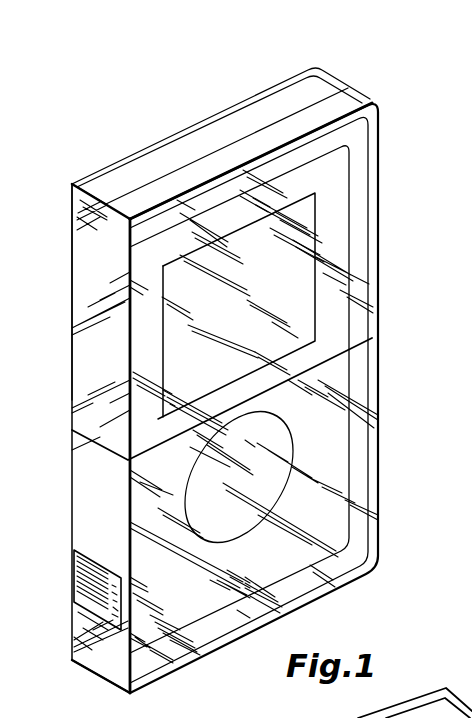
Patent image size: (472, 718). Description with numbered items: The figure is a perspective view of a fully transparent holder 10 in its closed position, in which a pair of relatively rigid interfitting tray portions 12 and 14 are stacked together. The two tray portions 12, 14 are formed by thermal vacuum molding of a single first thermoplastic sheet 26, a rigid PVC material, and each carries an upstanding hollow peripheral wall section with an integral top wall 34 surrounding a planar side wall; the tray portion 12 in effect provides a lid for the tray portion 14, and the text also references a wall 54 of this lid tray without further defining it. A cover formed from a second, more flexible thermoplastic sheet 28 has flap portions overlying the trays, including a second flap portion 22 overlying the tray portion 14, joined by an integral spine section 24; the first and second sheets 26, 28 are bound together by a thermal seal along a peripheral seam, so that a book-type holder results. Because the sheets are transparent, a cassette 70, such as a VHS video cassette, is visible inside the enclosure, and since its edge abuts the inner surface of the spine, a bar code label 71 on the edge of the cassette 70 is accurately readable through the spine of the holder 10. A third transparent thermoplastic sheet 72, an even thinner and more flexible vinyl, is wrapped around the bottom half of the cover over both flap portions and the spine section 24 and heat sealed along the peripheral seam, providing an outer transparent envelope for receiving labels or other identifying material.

The holder 10 is at (320, 53).
The tray portion 12 is at (335, 72).
The tray portion 14 is at (349, 92).
The second flap portion 22 is at (385, 177).
The spine section 24 is at (75, 355).
The first thermoplastic sheet 26 is at (126, 161).
The second thermoplastic sheet 28 is at (70, 254).
The top wall 34 is at (234, 150).
The top surface 54 is at (177, 152).
The cassette 70 is at (347, 257).
The bar code label 71 is at (101, 564).
The third transparent thermoplastic sheet 72 is at (365, 343).